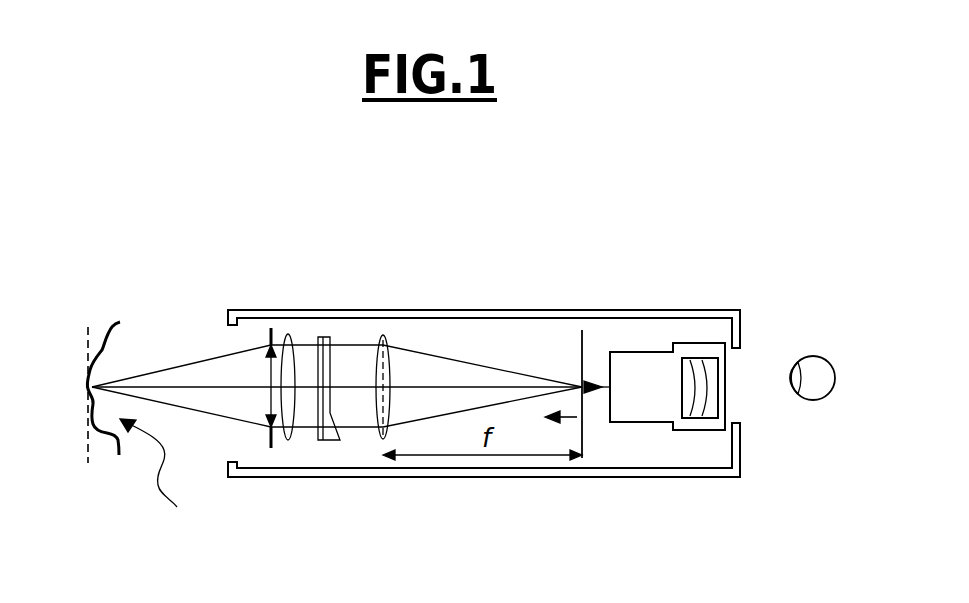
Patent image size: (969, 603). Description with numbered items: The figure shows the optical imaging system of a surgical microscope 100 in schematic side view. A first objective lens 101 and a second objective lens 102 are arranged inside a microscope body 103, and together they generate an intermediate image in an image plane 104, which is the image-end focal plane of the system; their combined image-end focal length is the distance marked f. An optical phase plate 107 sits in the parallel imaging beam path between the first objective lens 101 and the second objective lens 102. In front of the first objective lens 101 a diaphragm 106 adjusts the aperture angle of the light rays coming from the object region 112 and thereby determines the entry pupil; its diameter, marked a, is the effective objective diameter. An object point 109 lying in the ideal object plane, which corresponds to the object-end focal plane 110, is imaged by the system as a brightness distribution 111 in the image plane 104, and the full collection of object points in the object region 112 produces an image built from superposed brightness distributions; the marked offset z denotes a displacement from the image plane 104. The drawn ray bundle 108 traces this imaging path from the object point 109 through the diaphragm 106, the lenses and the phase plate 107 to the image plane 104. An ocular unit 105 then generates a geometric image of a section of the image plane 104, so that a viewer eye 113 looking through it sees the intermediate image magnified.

The surgical microscope 100 is at (375, 296).
The first objective lens 101 is at (283, 442).
The second objective lens 102 is at (383, 442).
The microscope body 103 is at (553, 477).
The image plane 104 is at (582, 330).
The ocular unit 105 is at (653, 423).
The diaphragm 106 is at (271, 448).
The optical phase plate 107 is at (316, 338).
The light beam 108 is at (465, 362).
The object point 109 is at (93, 387).
The object-end focal plane 110 is at (92, 465).
The brightness distribution 111 is at (594, 381).
The object region 112 is at (160, 481).
The viewer eye 113 is at (812, 402).